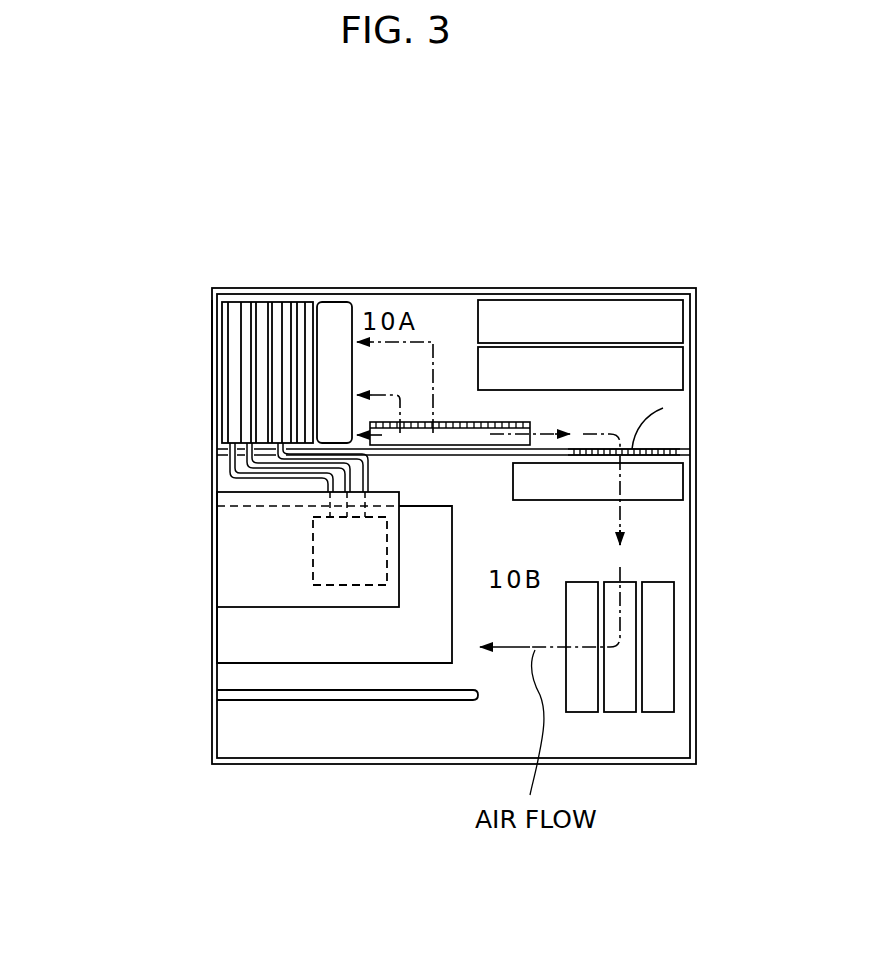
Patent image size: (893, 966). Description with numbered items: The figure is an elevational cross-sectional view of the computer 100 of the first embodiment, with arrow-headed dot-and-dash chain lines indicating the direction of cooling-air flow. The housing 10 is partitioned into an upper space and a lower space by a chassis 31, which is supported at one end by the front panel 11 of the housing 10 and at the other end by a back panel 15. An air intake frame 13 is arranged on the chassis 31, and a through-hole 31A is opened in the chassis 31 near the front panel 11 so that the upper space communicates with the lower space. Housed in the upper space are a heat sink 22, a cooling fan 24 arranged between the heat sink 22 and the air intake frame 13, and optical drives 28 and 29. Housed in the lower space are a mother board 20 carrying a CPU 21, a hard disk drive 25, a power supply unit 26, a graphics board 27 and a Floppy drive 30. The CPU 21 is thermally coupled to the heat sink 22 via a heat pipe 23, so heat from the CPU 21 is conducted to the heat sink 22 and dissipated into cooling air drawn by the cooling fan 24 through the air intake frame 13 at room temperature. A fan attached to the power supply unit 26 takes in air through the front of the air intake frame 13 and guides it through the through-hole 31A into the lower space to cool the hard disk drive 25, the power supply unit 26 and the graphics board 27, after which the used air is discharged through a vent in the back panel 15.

The computer 100 is at (652, 160).
The housing 10 is at (228, 288).
The front panel 11 is at (693, 603).
The air intake frame 13 is at (460, 421).
The back panel 15 is at (213, 370).
The mother board 20 is at (243, 643).
The CPU 21 is at (313, 550).
The heat sink 22 is at (232, 332).
The heat pipe 23 is at (227, 463).
The cooling fan 24 is at (333, 308).
The hard disk drive 25 is at (667, 693).
The power supply unit 26 is at (232, 585).
The graphics board 27 is at (347, 702).
The optical drive 28 is at (640, 308).
The optical drive 29 is at (673, 363).
The Floppy drive 30 is at (673, 487).
The chassis 31 is at (672, 449).
The through-hole 31A is at (663, 408).